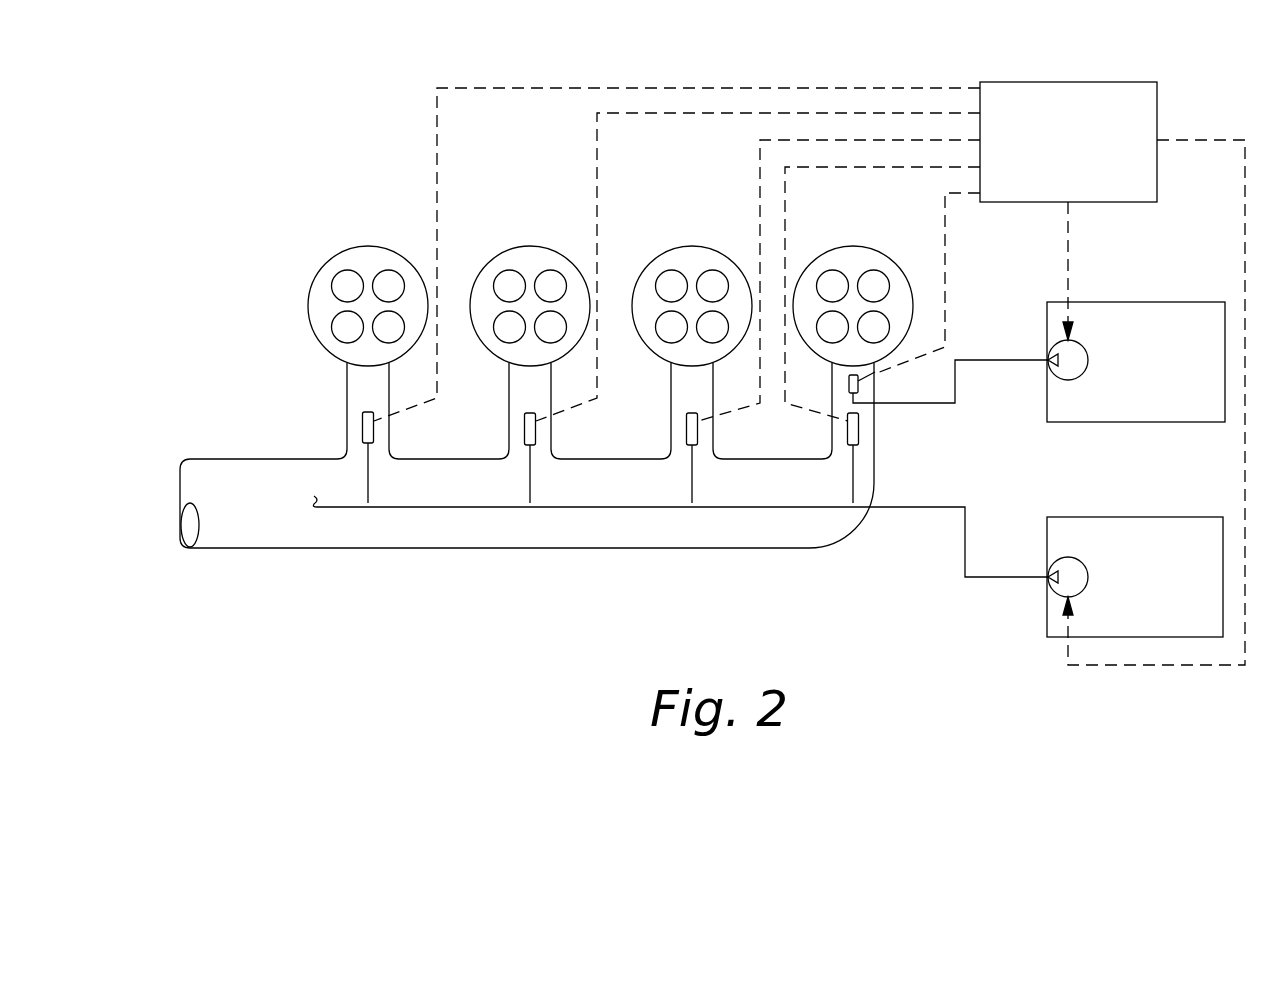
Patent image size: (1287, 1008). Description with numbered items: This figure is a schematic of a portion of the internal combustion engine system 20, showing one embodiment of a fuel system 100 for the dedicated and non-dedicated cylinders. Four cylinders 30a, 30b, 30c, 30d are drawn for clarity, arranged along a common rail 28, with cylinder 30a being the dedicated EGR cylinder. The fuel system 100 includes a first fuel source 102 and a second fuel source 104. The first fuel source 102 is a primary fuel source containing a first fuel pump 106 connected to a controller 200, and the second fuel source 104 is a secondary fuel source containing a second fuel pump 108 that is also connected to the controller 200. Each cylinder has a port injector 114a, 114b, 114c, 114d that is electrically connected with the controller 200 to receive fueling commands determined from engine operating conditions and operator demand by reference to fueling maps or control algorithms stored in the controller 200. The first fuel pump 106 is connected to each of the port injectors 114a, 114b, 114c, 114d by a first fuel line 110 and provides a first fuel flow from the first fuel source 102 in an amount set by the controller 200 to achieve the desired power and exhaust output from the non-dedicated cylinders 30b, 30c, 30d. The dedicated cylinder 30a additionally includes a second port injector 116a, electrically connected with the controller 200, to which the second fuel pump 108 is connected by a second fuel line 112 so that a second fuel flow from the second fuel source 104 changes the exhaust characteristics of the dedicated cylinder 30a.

The system 20 is at (283, 197).
The fuel rail / manifold 28 is at (255, 548).
The dedicated EGR cylinder 30a is at (881, 259).
The cylinder 30b is at (692, 246).
The cylinder 30c is at (530, 246).
The cylinder 30d is at (368, 246).
The fuel system 100 is at (1009, 610).
The first fuel source 102 is at (1120, 590).
The second fuel source 104 is at (1120, 373).
The first fuel pump 106 is at (1088, 559).
The second fuel pump 108 is at (1088, 342).
The first fuel line 110 is at (570, 505).
The second fuel line 112 is at (995, 362).
The port injector 114a is at (848, 438).
The port injector 114b is at (686, 438).
The port injector 114c is at (523, 438).
The port injector 114d is at (362, 428).
The second port injector 116a is at (858, 388).
The controller 200 is at (1051, 156).